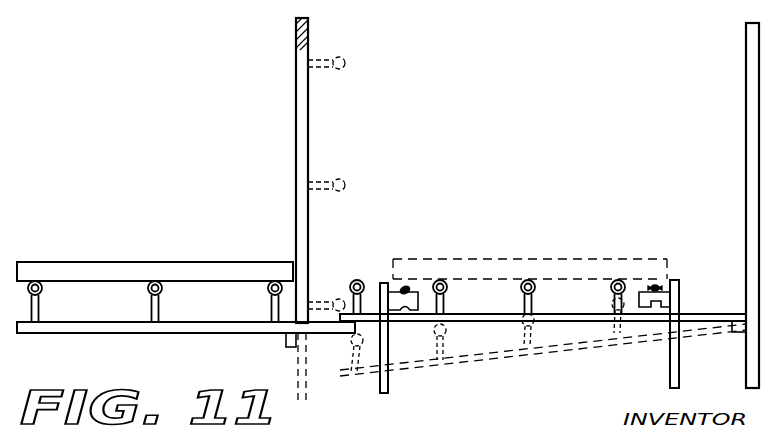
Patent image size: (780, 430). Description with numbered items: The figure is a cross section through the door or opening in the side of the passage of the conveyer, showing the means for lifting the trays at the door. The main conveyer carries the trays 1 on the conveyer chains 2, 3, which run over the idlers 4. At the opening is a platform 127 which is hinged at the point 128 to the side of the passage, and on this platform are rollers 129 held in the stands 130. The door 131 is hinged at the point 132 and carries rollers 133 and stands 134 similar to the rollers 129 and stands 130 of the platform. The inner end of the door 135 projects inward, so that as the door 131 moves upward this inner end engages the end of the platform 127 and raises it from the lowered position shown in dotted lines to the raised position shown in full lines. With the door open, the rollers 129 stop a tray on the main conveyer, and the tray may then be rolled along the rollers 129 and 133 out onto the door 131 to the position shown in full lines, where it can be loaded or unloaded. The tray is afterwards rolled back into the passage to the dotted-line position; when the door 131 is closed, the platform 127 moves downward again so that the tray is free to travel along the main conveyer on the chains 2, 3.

The tray 1 is at (186, 266).
The conveyer chain 2 is at (407, 290).
The conveyer chain 3 is at (660, 288).
The idler 4 is at (410, 310).
The platform 127 is at (564, 323).
The hinge point 128 is at (740, 332).
The roller 129 is at (536, 282).
The stand 130 is at (442, 300).
The door 131 is at (133, 329).
The hinge point 132 is at (290, 340).
The roller 133 is at (42, 302).
The stand 134 is at (38, 306).
The inner end of the door 135 is at (336, 333).